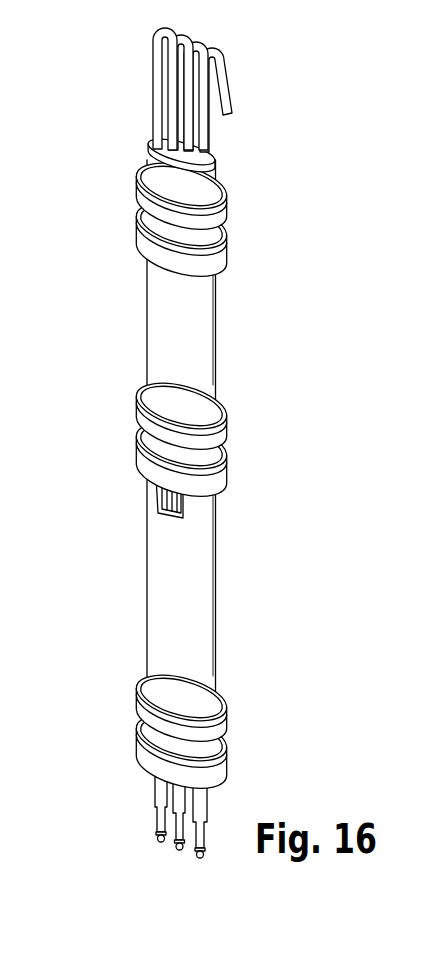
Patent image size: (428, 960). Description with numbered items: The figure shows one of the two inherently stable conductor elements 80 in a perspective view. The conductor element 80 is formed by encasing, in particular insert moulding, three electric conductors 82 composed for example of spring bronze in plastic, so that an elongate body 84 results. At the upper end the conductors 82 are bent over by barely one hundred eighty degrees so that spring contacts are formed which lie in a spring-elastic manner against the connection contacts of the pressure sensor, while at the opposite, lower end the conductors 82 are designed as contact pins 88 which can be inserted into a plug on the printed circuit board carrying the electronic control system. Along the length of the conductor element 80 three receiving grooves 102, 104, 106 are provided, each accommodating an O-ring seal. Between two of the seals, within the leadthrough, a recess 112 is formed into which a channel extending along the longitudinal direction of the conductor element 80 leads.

The conductor element 80 is at (87, 66).
The conductors 82 is at (207, 143).
The electrode body 84 is at (158, 312).
The contact pins 88 is at (156, 814).
The receiving groove 102 is at (140, 706).
The receiving groove 104 is at (140, 416).
The receiving groove 106 is at (140, 199).
The recess 112 is at (162, 489).